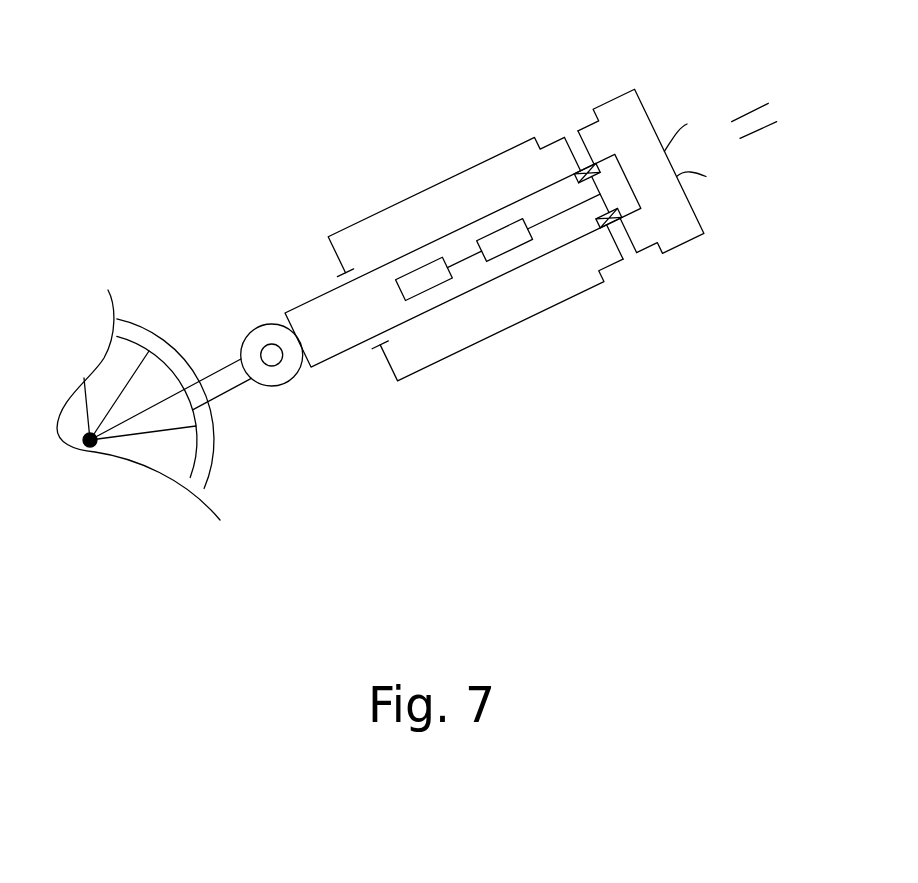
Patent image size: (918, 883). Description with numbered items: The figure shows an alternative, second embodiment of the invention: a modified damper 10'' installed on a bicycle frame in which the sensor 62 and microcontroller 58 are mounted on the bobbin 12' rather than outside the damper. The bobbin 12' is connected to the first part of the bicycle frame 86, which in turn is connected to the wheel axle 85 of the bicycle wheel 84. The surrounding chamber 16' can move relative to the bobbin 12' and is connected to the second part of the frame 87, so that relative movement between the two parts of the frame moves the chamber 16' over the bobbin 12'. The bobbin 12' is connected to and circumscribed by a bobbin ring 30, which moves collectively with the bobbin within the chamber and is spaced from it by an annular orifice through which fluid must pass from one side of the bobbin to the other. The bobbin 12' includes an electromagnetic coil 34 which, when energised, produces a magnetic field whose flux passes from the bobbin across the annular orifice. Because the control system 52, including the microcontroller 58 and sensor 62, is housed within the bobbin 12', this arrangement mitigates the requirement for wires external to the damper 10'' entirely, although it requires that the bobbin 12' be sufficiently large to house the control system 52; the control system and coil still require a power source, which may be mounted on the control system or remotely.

The modified damper 10'' is at (509, 225).
The bobbin 12' is at (463, 242).
The chamber 16' is at (491, 237).
The bobbin ring 30 is at (571, 135).
The electromagnetic coil 34 is at (621, 213).
The control system 52 is at (470, 273).
The microcontroller 58 is at (503, 242).
The sensor 62 is at (425, 283).
The bicycle wheel 84 is at (213, 470).
The wheel axle 85 is at (82, 447).
The first part of the bicycle frame 86 is at (230, 387).
The second part of the frame 87 is at (768, 130).